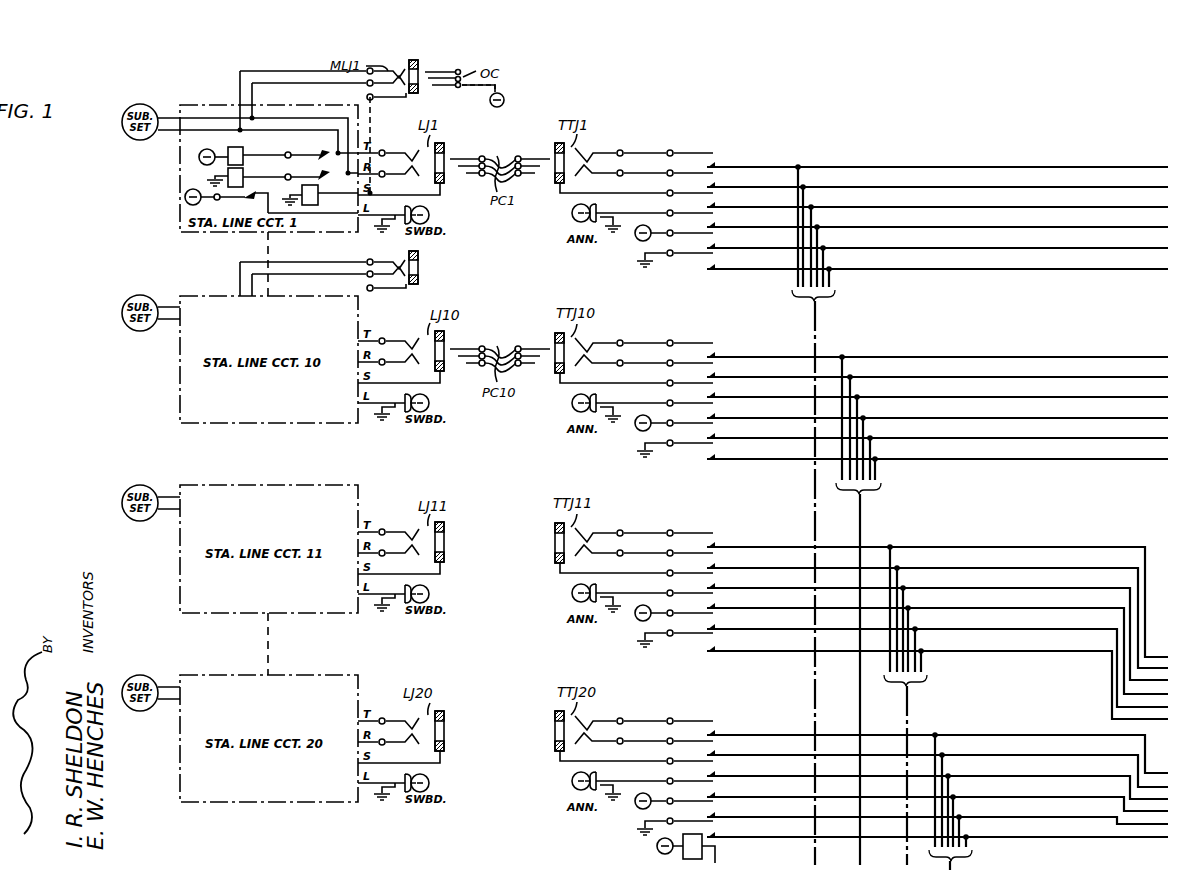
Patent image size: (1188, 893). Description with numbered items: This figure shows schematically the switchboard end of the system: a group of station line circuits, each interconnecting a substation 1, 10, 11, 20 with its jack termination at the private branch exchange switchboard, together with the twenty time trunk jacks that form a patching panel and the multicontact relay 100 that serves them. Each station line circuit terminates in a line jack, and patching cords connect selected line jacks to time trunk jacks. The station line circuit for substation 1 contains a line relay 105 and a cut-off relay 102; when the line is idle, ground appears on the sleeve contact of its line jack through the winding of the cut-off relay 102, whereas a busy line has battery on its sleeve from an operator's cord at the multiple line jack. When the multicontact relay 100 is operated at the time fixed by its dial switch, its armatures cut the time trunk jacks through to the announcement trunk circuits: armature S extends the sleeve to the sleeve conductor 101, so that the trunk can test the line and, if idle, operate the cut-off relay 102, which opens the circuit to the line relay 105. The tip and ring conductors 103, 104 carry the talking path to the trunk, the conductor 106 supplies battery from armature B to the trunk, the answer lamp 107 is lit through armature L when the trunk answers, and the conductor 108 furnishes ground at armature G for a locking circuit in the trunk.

The substation 1 is at (140, 141).
The substation 10 is at (143, 332).
The substation 11 is at (142, 521).
The substation 20 is at (142, 711).
The multicontact relay 100 is at (682, 858).
The sleeve conductor 101 is at (877, 206).
The cut-off relay 102 is at (317, 204).
The tip conductor 103 is at (940, 167).
The ring conductor 104 is at (1003, 187).
The line relay 105 is at (246, 155).
The conductor 106 is at (899, 249).
The announcement trunk or answer lamp 107 is at (568, 215).
The conductor 108 is at (1000, 270).